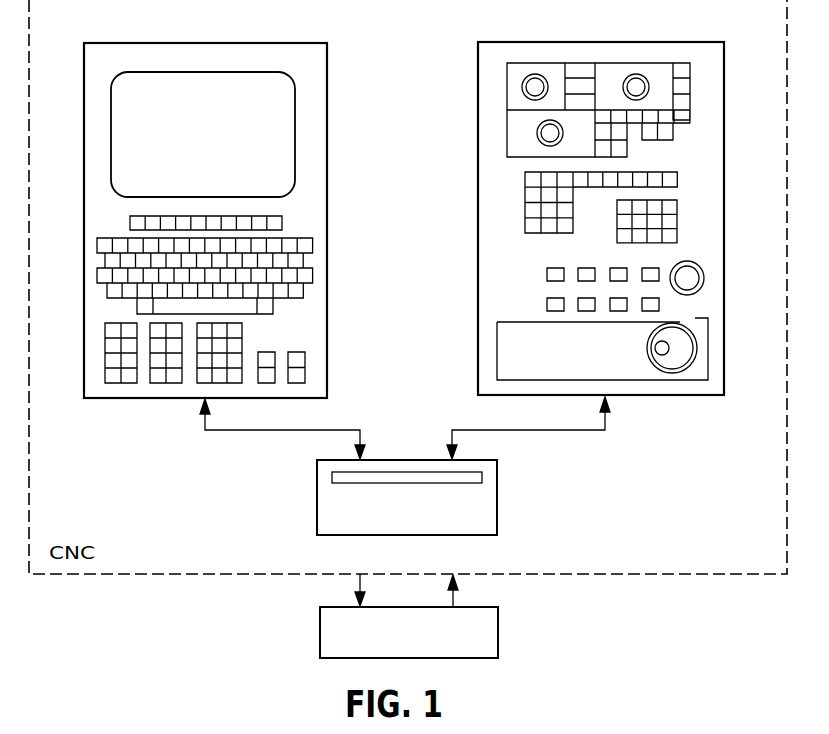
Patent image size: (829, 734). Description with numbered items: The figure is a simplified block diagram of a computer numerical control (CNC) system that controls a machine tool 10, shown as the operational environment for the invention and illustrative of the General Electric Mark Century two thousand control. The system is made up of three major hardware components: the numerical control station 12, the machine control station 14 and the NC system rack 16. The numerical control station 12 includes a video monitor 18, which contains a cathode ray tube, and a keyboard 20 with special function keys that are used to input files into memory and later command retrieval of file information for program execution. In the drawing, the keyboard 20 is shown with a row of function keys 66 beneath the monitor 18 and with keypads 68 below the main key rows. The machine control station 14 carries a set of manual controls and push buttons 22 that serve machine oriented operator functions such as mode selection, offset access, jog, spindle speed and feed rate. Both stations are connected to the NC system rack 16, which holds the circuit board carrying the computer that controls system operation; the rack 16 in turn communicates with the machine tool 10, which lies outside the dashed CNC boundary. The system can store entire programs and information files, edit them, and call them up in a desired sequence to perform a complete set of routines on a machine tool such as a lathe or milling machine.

The machine tool 10 is at (498, 640).
The numerical control station 12 is at (328, 168).
The machine control station 14 is at (478, 220).
The NC system rack 16 is at (497, 502).
The video monitor 18 is at (285, 128).
The keyboard 20 is at (347, 290).
The manual controls and push buttons 22 is at (465, 151).
The function keys 66 is at (280, 224).
The keypad 68 is at (105, 372).